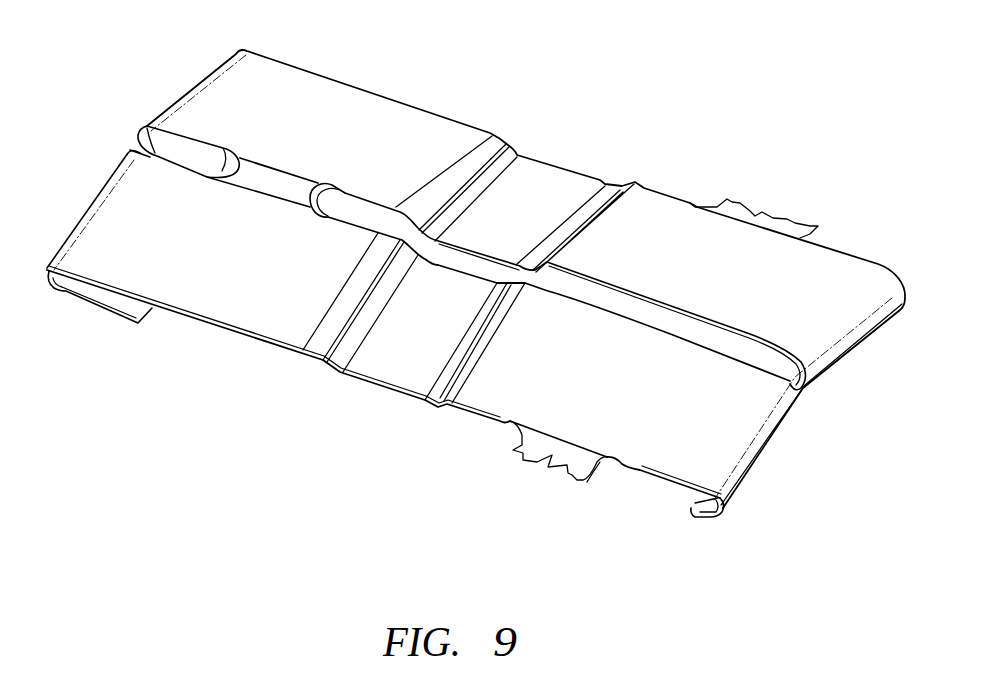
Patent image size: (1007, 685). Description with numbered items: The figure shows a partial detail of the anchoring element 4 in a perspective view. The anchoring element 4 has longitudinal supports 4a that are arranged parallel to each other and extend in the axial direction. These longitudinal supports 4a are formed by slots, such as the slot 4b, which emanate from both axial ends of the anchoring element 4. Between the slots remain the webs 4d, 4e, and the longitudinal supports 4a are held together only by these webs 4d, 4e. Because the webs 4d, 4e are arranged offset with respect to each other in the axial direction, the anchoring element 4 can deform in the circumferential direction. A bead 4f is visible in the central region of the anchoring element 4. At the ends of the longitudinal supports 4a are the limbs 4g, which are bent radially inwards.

The anchoring element 4 is at (176, 81).
The longitudinal supports 4a is at (248, 280).
The slot 4b is at (690, 330).
The web 4d is at (194, 159).
The web 4e is at (750, 213).
The bead 4f is at (538, 192).
The limbs 4g is at (92, 293).